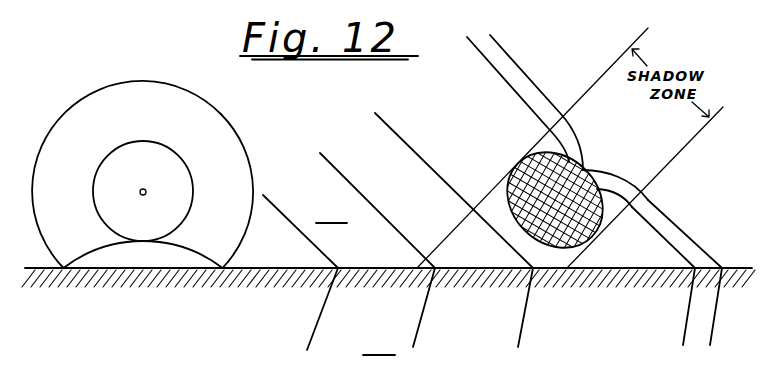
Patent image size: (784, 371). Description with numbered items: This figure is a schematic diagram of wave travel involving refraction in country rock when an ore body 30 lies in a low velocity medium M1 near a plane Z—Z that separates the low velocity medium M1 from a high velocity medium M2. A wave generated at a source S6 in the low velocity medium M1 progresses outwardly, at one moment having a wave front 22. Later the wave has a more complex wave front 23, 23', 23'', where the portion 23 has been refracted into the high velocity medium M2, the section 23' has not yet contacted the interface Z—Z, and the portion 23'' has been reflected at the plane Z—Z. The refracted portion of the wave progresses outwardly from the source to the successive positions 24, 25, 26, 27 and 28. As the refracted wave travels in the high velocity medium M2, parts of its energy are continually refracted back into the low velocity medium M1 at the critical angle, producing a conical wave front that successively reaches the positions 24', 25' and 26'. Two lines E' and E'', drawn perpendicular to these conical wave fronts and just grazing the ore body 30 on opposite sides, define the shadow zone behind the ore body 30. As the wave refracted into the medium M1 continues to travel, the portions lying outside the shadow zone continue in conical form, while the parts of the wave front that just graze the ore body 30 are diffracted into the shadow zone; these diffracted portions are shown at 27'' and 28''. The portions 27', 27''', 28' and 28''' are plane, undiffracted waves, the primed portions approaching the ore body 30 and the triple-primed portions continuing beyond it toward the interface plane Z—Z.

The wave front 22 is at (194, 209).
The refracted wave portion 23 is at (127, 202).
The wave section not yet contacting interface 23' is at (250, 191).
The reflected wave portion 23'' is at (145, 247).
The conical wave front position 24' is at (300, 218).
The refracted wave position 24 is at (332, 309).
The conical wave front position 25' is at (377, 210).
The refracted wave position 25 is at (436, 307).
The conical wave front position 26' is at (454, 183).
The refracted wave position 26 is at (542, 307).
The plane undiffracted wave portion 27' is at (505, 99).
The plane undiffracted wave portion 28' is at (536, 101).
The diffracted wave front portion 27'' is at (571, 181).
The diffracted wave front portion 28'' is at (615, 167).
The plane undiffracted wave portion 27''' is at (661, 237).
The plane undiffracted wave portion 28''' is at (691, 234).
The refracted wave position 27 is at (672, 306).
The refracted wave position 28 is at (729, 306).
The ore body 30 is at (507, 191).
The wave source S6 is at (145, 189).
The low velocity medium M1 is at (331, 212).
The high velocity medium M2 is at (379, 344).
The plane Z— Z is at (387, 268).
The shadow zone boundary line E' is at (532, 141).
The shadow zone boundary line E'' is at (661, 180).